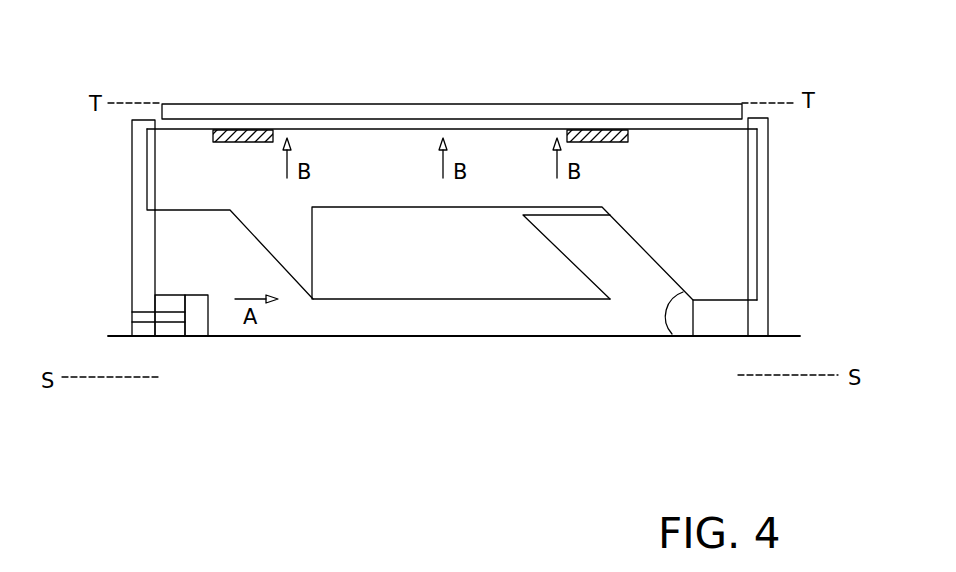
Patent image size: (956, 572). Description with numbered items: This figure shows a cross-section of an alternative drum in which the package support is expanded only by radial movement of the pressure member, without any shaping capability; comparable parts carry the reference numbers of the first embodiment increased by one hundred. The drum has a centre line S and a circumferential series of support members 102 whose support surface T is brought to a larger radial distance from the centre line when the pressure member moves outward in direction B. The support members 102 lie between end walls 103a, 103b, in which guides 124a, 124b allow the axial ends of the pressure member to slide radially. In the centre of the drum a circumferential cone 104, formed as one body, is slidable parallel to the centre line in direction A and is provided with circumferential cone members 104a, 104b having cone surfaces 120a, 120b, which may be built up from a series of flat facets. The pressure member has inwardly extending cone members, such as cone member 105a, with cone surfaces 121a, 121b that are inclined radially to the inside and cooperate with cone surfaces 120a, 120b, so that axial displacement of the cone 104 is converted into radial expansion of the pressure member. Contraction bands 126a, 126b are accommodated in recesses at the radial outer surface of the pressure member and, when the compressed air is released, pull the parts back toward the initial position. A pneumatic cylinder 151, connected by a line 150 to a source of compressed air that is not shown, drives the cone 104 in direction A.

The support members 102 is at (360, 112).
The end wall 103a is at (137, 255).
The end wall 103b is at (760, 282).
The guide 124a is at (150, 188).
The guide 124b is at (758, 183).
The contraction band 126a is at (603, 133).
The contraction band 126b is at (247, 133).
The cone 104 is at (437, 328).
The cone member 104a is at (631, 250).
The cone member 104b is at (226, 265).
The cone member 105a is at (731, 231).
The cone surface 120a is at (658, 268).
The cone surface 120b is at (297, 277).
The cone surface 121a is at (677, 336).
The cone surface 121b is at (313, 297).
The line 150 is at (173, 317).
The pneumatic cylinder 151 is at (198, 317).